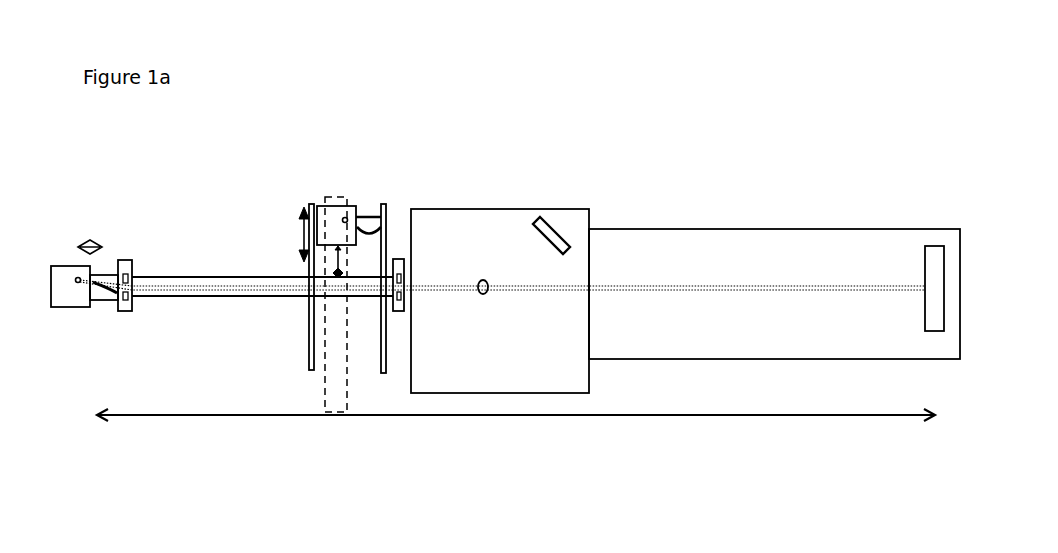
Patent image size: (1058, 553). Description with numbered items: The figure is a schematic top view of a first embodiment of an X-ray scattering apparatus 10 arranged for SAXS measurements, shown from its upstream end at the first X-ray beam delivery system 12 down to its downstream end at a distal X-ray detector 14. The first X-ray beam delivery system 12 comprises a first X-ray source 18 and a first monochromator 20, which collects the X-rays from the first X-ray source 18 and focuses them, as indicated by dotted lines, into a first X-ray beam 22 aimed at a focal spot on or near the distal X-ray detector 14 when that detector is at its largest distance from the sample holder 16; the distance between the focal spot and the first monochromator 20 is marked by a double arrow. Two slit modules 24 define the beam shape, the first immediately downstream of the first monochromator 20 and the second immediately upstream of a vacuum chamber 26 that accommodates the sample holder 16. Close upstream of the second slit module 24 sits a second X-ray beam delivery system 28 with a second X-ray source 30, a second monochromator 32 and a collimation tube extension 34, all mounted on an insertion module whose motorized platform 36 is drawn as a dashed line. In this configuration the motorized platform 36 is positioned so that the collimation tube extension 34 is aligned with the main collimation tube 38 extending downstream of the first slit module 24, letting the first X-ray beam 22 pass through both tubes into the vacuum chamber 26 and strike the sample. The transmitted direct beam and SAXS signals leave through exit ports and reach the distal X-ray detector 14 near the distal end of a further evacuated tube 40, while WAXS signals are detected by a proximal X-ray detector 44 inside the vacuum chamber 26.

The X-ray scattering apparatus 10 is at (675, 111).
The first X-ray beam delivery system 12 is at (484, 247).
The distal X-ray detector 14 is at (933, 268).
The sample holder 16 is at (483, 280).
The first X-ray source 18 is at (68, 293).
The first monochromator 20 is at (103, 297).
The first X-ray beam 22 is at (688, 284).
The slit modules 24 is at (128, 262).
The vacuum chamber 26 is at (543, 209).
The second X-ray beam delivery system 28 is at (331, 261).
The second X-ray source 30 is at (322, 206).
The second monochromator 32 is at (362, 214).
The collimation tube extension 34 is at (333, 298).
The motorized platform 36 is at (336, 393).
The main collimation tube 38 is at (237, 297).
The further evacuated tube 40 is at (737, 352).
The proximal X-ray detector 44 is at (557, 222).